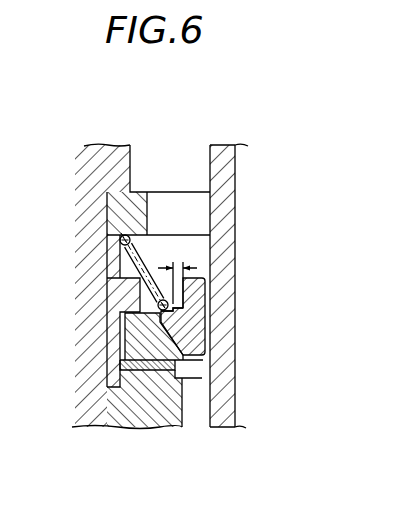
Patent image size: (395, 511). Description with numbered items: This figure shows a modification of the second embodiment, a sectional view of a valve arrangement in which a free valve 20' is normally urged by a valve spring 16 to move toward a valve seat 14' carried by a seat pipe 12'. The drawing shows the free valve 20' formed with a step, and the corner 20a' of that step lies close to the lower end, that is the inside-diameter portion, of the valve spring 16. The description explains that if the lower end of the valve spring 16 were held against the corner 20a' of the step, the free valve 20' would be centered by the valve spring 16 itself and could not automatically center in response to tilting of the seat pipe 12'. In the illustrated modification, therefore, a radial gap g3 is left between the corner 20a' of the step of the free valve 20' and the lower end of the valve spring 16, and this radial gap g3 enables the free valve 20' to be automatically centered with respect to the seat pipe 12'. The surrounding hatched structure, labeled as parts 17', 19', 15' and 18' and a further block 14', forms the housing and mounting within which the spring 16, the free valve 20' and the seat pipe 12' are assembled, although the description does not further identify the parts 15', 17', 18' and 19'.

The seat pipe 12' is at (247, 286).
The valve seat 14' is at (113, 340).
The shim plate 15' is at (99, 389).
The valve spring 16 is at (122, 238).
The housing body 17' is at (116, 286).
The base block 18' is at (154, 420).
The insert block 19' is at (86, 208).
The free valve 20' is at (223, 316).
The corner of step of free valve 20a' is at (229, 327).
The radial gap g3 is at (176, 263).